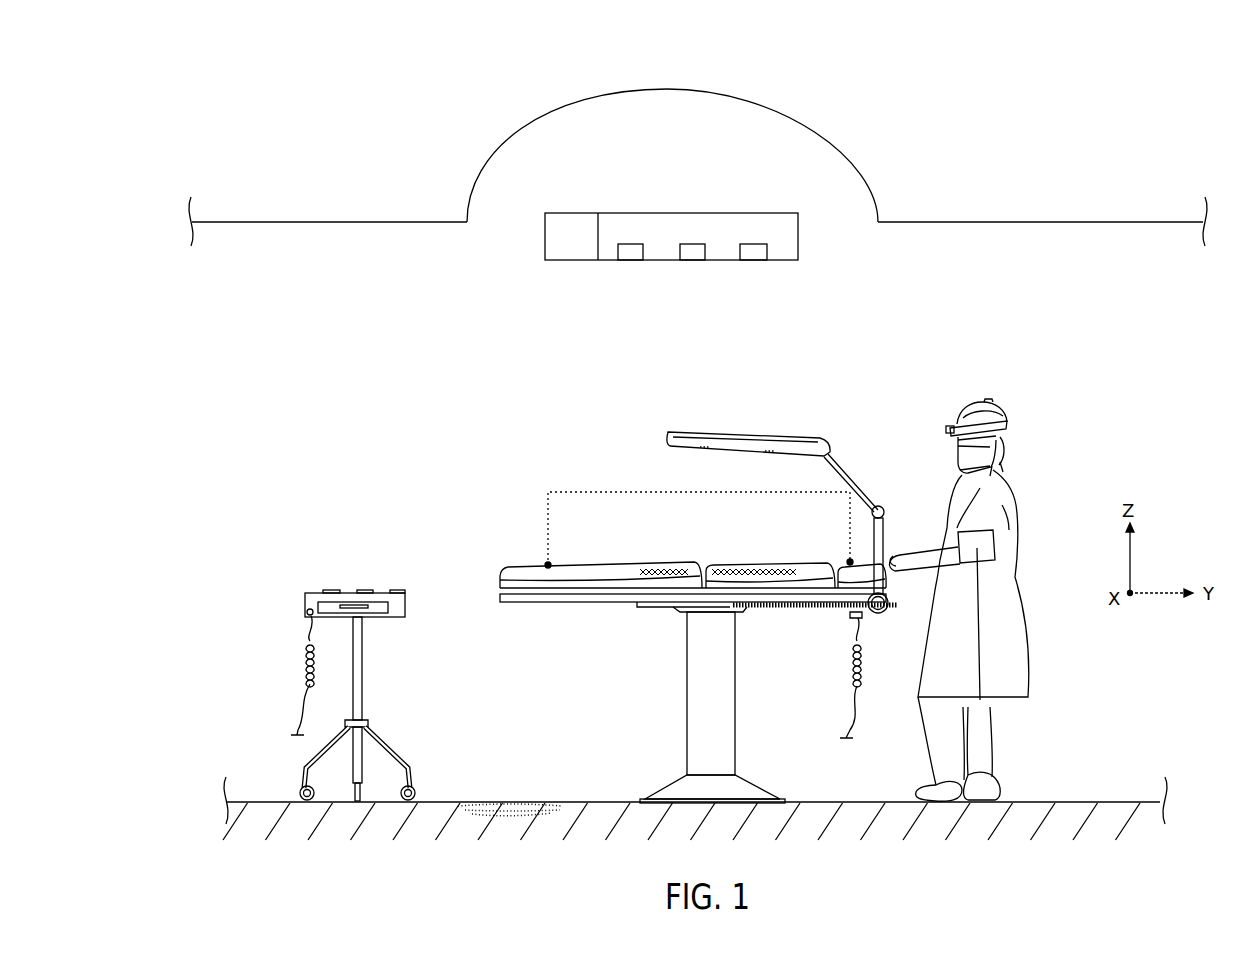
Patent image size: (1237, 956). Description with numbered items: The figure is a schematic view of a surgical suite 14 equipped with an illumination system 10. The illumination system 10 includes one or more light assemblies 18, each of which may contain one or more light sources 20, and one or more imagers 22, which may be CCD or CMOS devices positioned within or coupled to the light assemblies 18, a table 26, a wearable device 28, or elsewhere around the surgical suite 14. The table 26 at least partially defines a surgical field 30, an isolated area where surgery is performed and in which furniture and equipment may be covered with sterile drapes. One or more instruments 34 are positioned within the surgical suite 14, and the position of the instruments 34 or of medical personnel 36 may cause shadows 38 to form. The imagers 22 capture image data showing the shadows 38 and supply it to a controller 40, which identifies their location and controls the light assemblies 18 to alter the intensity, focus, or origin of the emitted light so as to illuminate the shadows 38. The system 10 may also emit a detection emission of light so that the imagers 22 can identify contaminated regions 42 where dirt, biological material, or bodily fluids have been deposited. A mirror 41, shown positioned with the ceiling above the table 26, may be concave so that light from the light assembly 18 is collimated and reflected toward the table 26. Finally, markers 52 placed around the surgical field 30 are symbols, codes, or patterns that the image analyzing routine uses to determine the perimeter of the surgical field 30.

The illumination system 10 is at (911, 331).
The surgical suite 14 is at (418, 383).
The light assembly 18 is at (677, 238).
The light source 20 is at (630, 257).
The imager 22 is at (583, 246).
The table 26 is at (666, 662).
The wearable device 28 is at (986, 579).
The surgical field 30 is at (592, 492).
The instrument 34 is at (331, 590).
The medical personnel 36 is at (1011, 425).
The shadow 38 is at (730, 567).
The controller 40 is at (664, 213).
The mirror 41 is at (803, 127).
The contaminated region 42 is at (512, 800).
The marker 52 is at (548, 565).